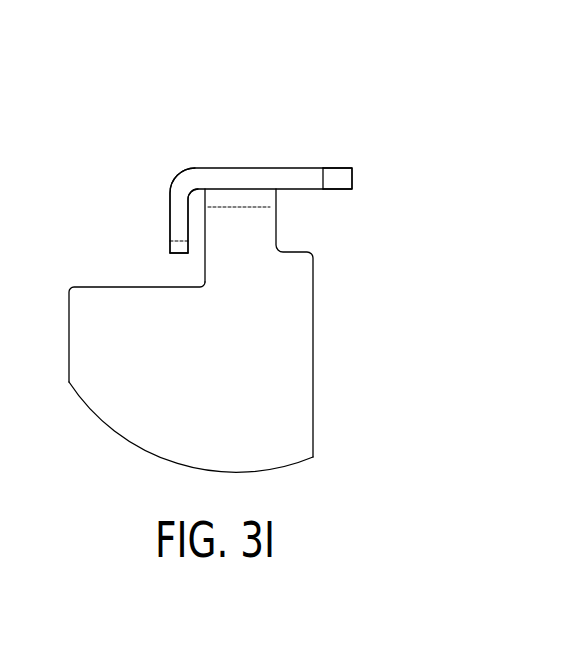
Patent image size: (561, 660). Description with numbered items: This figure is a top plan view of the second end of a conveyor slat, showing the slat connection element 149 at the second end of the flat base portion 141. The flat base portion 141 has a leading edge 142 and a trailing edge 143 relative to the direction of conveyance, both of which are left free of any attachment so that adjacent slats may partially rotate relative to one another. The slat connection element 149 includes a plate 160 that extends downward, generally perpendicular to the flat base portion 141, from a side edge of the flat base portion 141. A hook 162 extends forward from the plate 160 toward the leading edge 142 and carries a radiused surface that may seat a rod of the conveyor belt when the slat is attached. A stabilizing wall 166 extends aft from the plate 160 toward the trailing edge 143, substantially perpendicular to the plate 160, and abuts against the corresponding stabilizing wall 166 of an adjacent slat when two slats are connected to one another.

The slat connection element 149 is at (296, 99).
The plate 160 is at (220, 177).
The hook 162 is at (347, 178).
The stabilizing wall 166 is at (175, 228).
The leading edge 142 is at (314, 308).
The trailing edge 143 is at (68, 320).
The flat base portion 141 is at (93, 375).